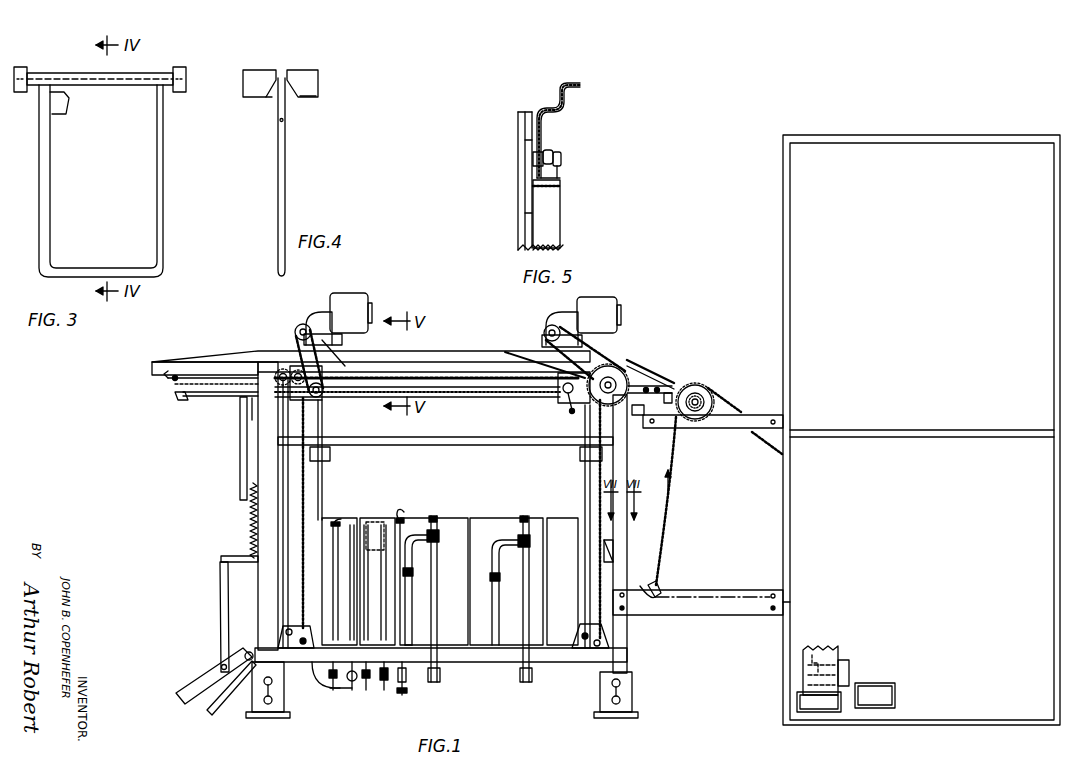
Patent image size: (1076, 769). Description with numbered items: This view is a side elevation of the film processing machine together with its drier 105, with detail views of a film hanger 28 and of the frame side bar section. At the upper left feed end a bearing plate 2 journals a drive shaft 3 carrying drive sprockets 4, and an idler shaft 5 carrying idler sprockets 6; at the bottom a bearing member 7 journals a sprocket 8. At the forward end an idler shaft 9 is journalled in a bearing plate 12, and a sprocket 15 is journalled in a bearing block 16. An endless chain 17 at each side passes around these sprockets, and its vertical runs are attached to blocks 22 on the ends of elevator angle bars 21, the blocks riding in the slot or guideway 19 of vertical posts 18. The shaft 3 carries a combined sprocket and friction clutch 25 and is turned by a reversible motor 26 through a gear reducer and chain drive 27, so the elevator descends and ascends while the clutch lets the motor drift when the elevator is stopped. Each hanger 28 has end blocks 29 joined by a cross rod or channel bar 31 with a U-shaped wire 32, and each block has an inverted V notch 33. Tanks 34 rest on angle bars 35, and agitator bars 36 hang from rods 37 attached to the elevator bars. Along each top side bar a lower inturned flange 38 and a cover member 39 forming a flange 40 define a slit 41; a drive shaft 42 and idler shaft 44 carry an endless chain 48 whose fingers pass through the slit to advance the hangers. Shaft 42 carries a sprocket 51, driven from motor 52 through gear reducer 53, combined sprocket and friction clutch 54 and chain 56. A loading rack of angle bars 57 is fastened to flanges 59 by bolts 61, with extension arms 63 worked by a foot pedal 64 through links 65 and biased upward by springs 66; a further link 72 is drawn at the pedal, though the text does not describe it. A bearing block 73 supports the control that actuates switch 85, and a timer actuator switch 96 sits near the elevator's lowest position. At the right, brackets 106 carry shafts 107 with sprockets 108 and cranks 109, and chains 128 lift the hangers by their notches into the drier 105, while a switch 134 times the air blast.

In FIG. 1, the bearing plate 2 is at (303, 395).
In FIG. 1, the drive shaft 3 is at (326, 395).
In FIG. 1, the drive sprocket 4 is at (322, 351).
In FIG. 1, the idler shaft 5 is at (276, 382).
In FIG. 1, the idler sprocket 6 is at (286, 370).
In FIG. 1, the bearing member 7 is at (310, 615).
In FIG. 1, the sprocket 8 is at (292, 628).
In FIG. 1, the idler shaft 9 is at (576, 416).
In FIG. 1, the bearing plate 12 is at (566, 398).
In FIG. 1, the sprocket 15 is at (590, 628).
In FIG. 1, the bearing block 16 is at (582, 638).
In FIG. 1, the endless chain 17 is at (470, 382).
In FIG. 5, the vertical post 18 is at (556, 208).
In FIG. 1, the vertical post 18 is at (266, 597).
In FIG. 5, the slot or guideway 19 is at (523, 232).
In FIG. 1, the elevator angle bar 21 is at (492, 440).
In FIG. 5, the block 22 is at (528, 205).
In FIG. 1, the block 22 is at (322, 450).
In FIG. 1, the combined sprocket and friction clutch 25 is at (340, 366).
In FIG. 1, the reversible motor 26 is at (345, 310).
In FIG. 1, the gear reducer and chain drive 27 is at (297, 330).
In FIG. 3, the hanger 28 is at (38, 178).
In FIG. 3, the end block 29 is at (22, 67).
In FIG. 4, the end block 29 is at (306, 79).
In FIG. 3, the cross rod or channel bar 31 is at (130, 87).
In FIG. 4, the cross rod or channel bar 31 is at (279, 80).
In FIG. 3, the U-shaped wire 32 is at (118, 270).
In FIG. 4, the U-shaped wire 32 is at (285, 180).
In FIG. 4, the inverted V notch 33 is at (269, 98).
In FIG. 1, the tank 34 is at (448, 516).
In FIG. 1, the angle bar 35 is at (446, 644).
In FIG. 1, the spaced bar 36 is at (398, 518).
In FIG. 1, the rod 37 is at (364, 500).
In FIG. 5, the lower inturned flange 38 is at (538, 157).
In FIG. 5, the cover member 39 is at (563, 152).
In FIG. 5, the flange 40 is at (562, 160).
In FIG. 5, the slit 41 is at (566, 160).
In FIG. 1, the drive shaft 42 is at (616, 380).
In FIG. 1, the idler shaft 44 is at (243, 396).
In FIG. 5, the endless chain 48 is at (550, 151).
In FIG. 1, the endless chain 48 is at (240, 385).
In FIG. 1, the sprocket 51 is at (505, 352).
In FIG. 1, the motor 52 is at (600, 300).
In FIG. 1, the gear reducer 53 is at (558, 322).
In FIG. 1, the combined sprocket and friction clutch 54 is at (546, 338).
In FIG. 1, the chain 56 is at (557, 390).
In FIG. 1, the angle bar 57 is at (190, 381).
In FIG. 1, the flange 59 is at (243, 458).
In FIG. 1, the bolt 61 is at (255, 407).
In FIG. 1, the rearward extension arm 63 is at (224, 556).
In FIG. 1, the foot pedal 64 is at (195, 690).
In FIG. 1, the link 65 is at (221, 617).
In FIG. 1, the spring 66 is at (250, 523).
In FIG. 1, the link 72 is at (211, 716).
In FIG. 1, the bearing block 73 is at (640, 372).
In FIG. 1, the switch 85 is at (607, 354).
In FIG. 1, the timer actuator switch 96 is at (613, 560).
In FIG. 1, the drier 105 is at (786, 232).
In FIG. 1, the bracket 106 is at (673, 409).
In FIG. 1, the shaft 107 is at (707, 397).
In FIG. 1, the sprocket 108 is at (703, 396).
In FIG. 1, the crank 109 is at (699, 408).
In FIG. 1, the chain 128 is at (668, 530).
In FIG. 1, the switch 134 is at (437, 568).